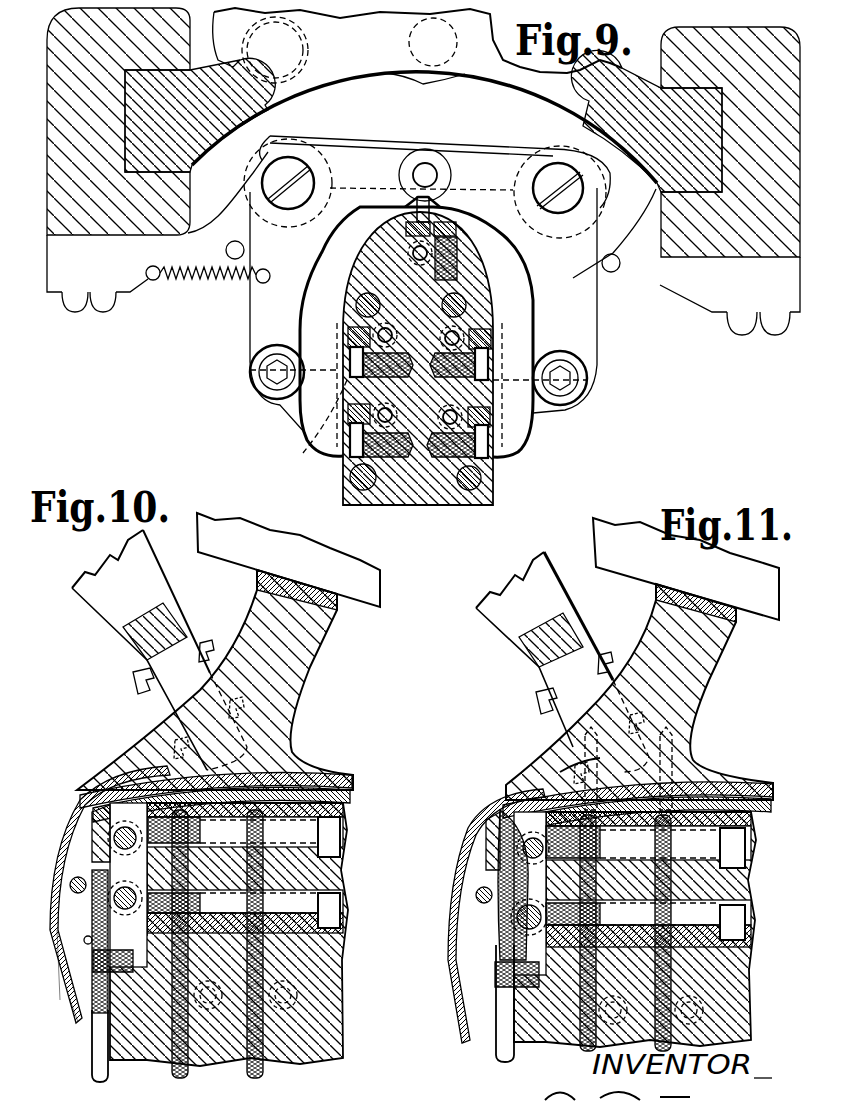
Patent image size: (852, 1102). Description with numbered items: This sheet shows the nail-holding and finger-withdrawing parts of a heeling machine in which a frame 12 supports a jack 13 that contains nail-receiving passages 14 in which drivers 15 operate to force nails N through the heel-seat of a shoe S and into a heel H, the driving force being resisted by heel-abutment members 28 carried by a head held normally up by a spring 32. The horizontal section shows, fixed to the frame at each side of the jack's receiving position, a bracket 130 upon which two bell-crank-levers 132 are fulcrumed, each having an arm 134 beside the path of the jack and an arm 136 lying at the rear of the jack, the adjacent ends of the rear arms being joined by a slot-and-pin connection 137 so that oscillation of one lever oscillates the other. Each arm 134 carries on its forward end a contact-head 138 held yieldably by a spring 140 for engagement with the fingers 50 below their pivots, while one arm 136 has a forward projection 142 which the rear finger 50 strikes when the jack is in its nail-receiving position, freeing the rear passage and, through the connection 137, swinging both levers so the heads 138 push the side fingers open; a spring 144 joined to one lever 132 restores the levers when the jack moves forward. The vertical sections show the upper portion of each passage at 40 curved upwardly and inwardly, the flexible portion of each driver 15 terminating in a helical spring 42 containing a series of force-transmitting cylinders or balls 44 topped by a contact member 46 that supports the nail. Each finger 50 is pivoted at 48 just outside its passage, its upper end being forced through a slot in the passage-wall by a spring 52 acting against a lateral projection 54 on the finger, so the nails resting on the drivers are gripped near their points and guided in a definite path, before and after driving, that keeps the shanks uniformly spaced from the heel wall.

In FIG. 9, the frame 12 is at (661, 215).
In FIG. 9, the jack 13 is at (368, 497).
In FIG. 10, the jack 13 is at (343, 1033).
In FIG. 11, the jack 13 is at (752, 1005).
In FIG. 10, the nail-receiving passages 14 is at (75, 1022).
In FIG. 10, the drivers 15 is at (95, 1040).
In FIG. 11, the drivers 15 is at (495, 1055).
In FIG. 10, the heel-abutment members 28 is at (247, 558).
In FIG. 11, the heel-abutment members 28 is at (662, 570).
In FIG. 9, the spring 32 is at (409, 43).
In FIG. 10, the curved upper portion of passage 40 is at (97, 870).
In FIG. 9, the helical spring 42 is at (412, 249).
In FIG. 10, the helical spring 42 is at (113, 908).
In FIG. 11, the helical spring 42 is at (520, 850).
In FIG. 9, the force-transmitting cylinders or balls 44 is at (412, 254).
In FIG. 10, the force-transmitting cylinders or balls 44 is at (84, 939).
In FIG. 10, the contact member 46 is at (92, 893).
In FIG. 11, the contact member 46 is at (505, 812).
In FIG. 10, the pivot 48 is at (70, 885).
In FIG. 11, the pivot 48 is at (477, 893).
In FIG. 9, the finger 50 is at (412, 225).
In FIG. 10, the finger 50 is at (93, 827).
In FIG. 11, the finger 50 is at (495, 833).
In FIG. 9, the spring 52 is at (450, 447).
In FIG. 10, the spring 52 is at (93, 960).
In FIG. 11, the spring 52 is at (474, 993).
In FIG. 9, the lateral projection 54 is at (488, 362).
In FIG. 9, the bracket 130 is at (138, 292).
In FIG. 9, the bell-crank-levers 132 is at (262, 160).
In FIG. 9, the arm 134 is at (250, 338).
In FIG. 9, the arm 136 is at (372, 152).
In FIG. 9, the slot-and-pin connection 137 is at (423, 163).
In FIG. 9, the contact-head 138 is at (322, 457).
In FIG. 9, the spring 140 is at (298, 408).
In FIG. 9, the forward projection 142 is at (412, 203).
In FIG. 9, the spring 144 is at (233, 283).
In FIG. 10, the heel H is at (300, 682).
In FIG. 11, the heel H is at (708, 690).
In FIG. 10, the nails N is at (97, 790).
In FIG. 11, the nails N is at (583, 757).
In FIG. 10, the shoe S is at (57, 990).
In FIG. 11, the shoe S is at (452, 913).